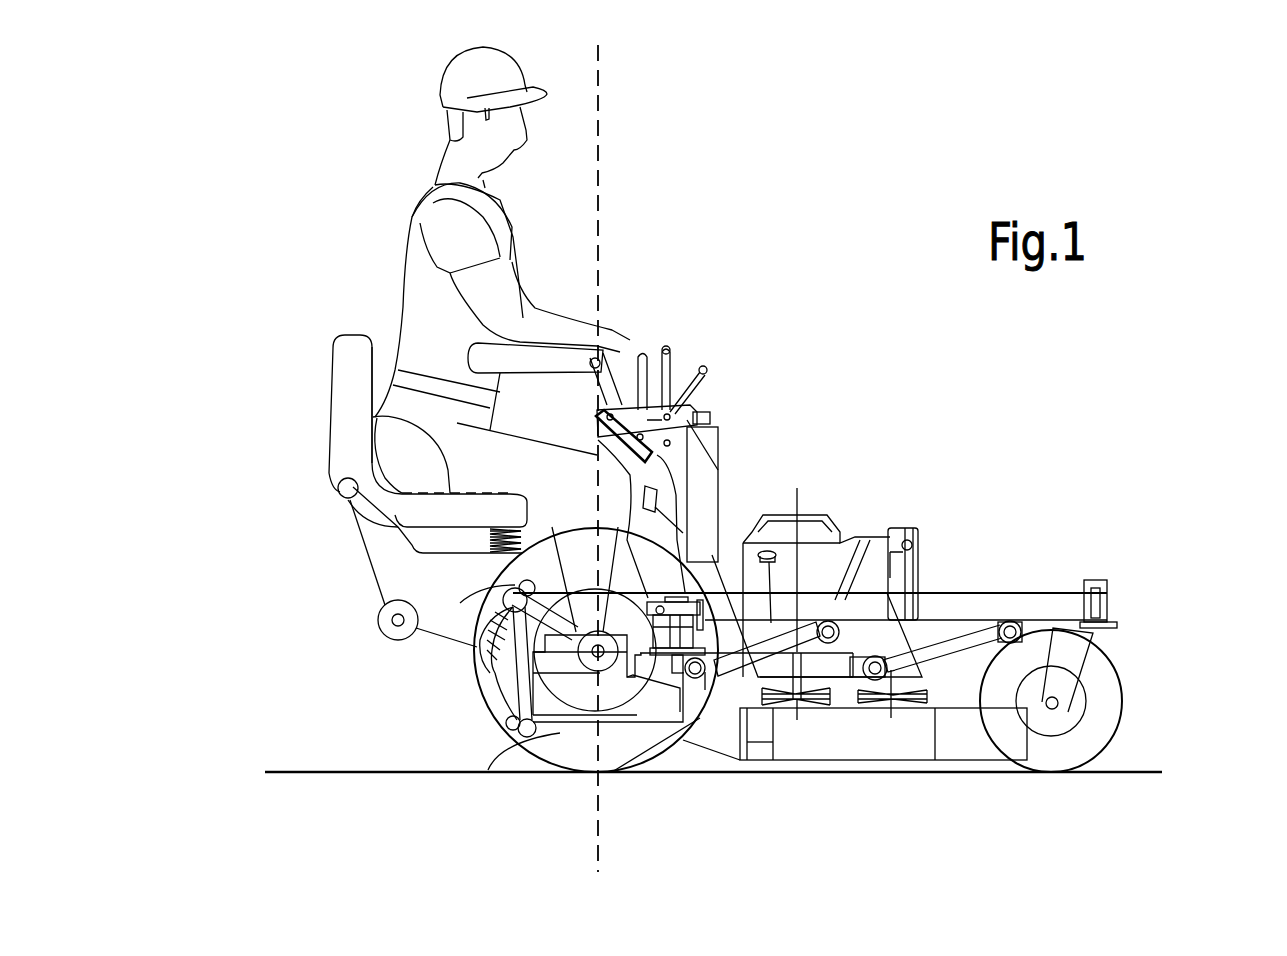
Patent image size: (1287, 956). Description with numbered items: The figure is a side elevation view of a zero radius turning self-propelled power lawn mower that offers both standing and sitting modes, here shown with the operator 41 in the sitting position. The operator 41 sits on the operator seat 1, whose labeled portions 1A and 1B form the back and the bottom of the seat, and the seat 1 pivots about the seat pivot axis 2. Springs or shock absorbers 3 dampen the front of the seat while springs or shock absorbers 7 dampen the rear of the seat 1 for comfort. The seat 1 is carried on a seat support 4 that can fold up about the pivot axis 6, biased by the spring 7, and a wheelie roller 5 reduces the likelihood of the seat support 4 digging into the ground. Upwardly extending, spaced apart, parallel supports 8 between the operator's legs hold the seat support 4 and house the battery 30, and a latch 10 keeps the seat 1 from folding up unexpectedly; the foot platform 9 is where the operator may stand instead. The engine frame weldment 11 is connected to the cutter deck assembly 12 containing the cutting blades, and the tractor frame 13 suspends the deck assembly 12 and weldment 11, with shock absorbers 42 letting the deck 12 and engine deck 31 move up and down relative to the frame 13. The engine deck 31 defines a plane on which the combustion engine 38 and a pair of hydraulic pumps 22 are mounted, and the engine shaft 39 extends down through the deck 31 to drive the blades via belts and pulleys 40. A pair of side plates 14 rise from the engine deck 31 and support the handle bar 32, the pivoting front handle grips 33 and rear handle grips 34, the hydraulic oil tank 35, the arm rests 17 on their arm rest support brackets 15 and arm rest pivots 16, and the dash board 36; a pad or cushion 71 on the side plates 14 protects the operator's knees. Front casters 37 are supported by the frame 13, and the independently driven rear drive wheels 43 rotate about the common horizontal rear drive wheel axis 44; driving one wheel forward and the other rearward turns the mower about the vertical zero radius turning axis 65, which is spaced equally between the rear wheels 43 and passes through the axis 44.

The operator seat 1 is at (338, 442).
The seat back 1A is at (372, 362).
The seat bottom 1B is at (370, 415).
The seat pivot axis 2 is at (340, 490).
The springs or shock absorbers 3 is at (490, 533).
The seat support 4 is at (378, 568).
The wheelie roller 5 is at (380, 635).
The pivot axis 6 is at (480, 602).
The springs or shock absorbers 7 is at (510, 682).
The upwardly extending supports 8 is at (507, 713).
The foot platform 9 is at (477, 772).
The latch 10 is at (512, 580).
The engine frame weldment 11 is at (707, 733).
The cutter deck assembly 12 is at (750, 742).
The tractor frame 13 is at (1013, 610).
The side plates 14 is at (712, 592).
The arm rest support brackets 15 is at (700, 412).
The arm rest pivots 16 is at (600, 360).
The arm rests 17 is at (542, 360).
The hydraulic pumps 22 is at (690, 593).
The battery 30 is at (627, 752).
The engine deck 31 is at (733, 657).
The handle bar 32 is at (668, 358).
The front handle grips 33 is at (690, 367).
The rear handle grips 34 is at (645, 350).
The hydraulic oil tank 35 is at (707, 502).
The dash board 36 is at (583, 380).
The front casters 37 is at (1147, 655).
The combustion engine 38 is at (732, 688).
The engine shaft 39 is at (828, 668).
The belts and pulleys 40 is at (797, 702).
The operator 41 is at (412, 247).
The shock absorbers 42 is at (867, 563).
The rear drive wheels 43 is at (507, 717).
The rear drive wheel axis 44 is at (589, 545).
The vertical zero radius turning axis 65 is at (598, 150).
The pad or cushion 71 is at (653, 525).